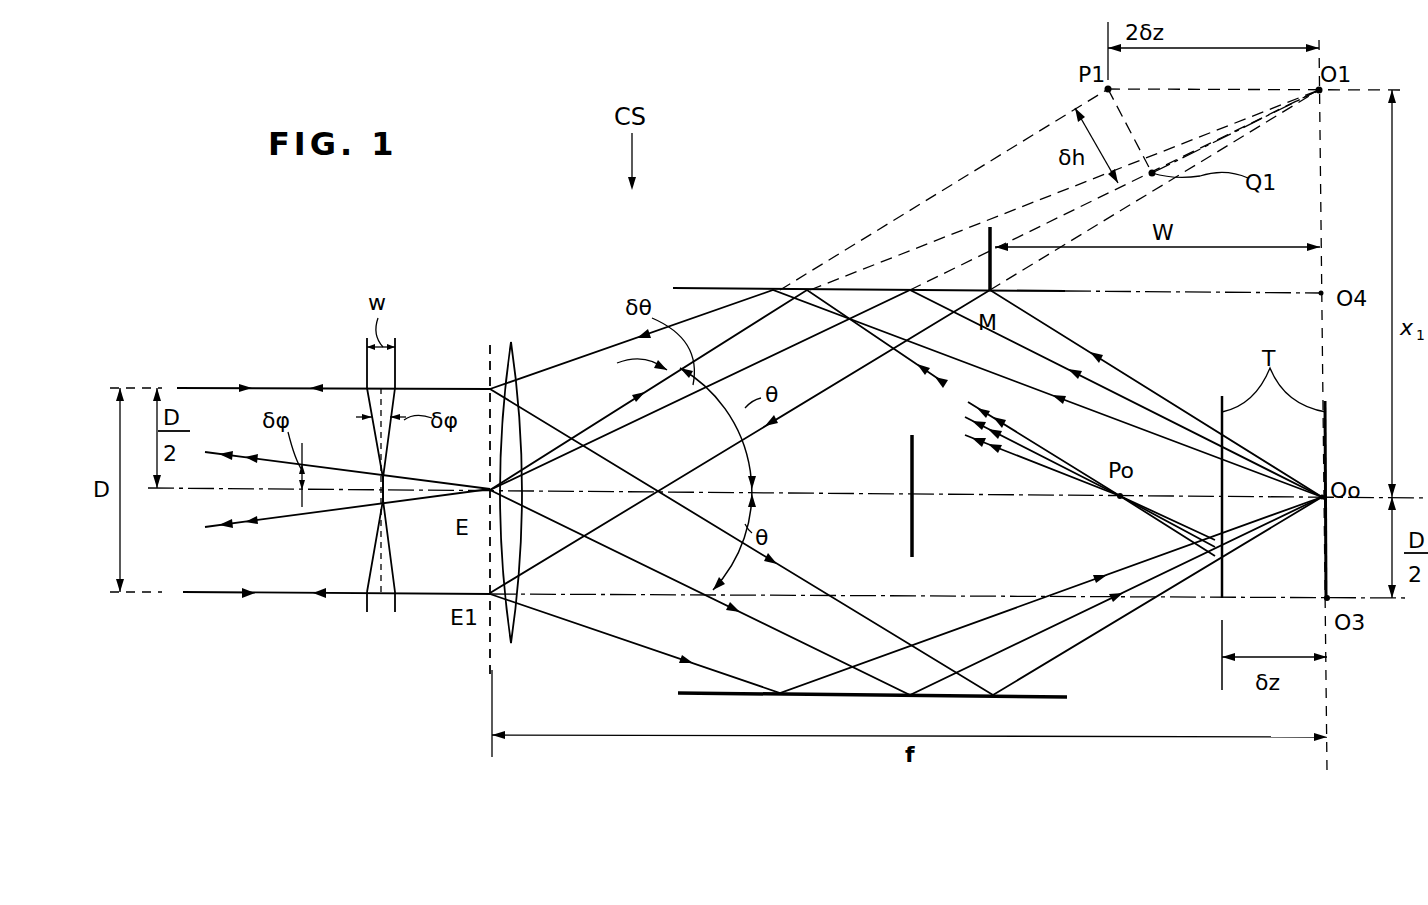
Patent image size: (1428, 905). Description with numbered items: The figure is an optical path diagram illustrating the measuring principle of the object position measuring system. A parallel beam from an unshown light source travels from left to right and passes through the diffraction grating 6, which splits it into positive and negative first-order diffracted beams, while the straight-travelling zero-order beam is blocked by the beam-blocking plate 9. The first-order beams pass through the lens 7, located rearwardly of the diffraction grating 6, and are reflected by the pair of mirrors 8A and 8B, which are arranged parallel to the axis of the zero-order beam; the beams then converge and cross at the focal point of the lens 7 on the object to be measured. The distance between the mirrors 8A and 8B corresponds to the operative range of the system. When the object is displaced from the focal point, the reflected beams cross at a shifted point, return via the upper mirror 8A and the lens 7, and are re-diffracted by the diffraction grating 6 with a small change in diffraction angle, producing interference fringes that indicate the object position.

The diffraction grating 6 is at (488, 345).
The lens 7 is at (516, 345).
The upper mirror 8A is at (742, 288).
The lower mirror 8B is at (678, 693).
The beam-blocking plate 9 is at (914, 528).